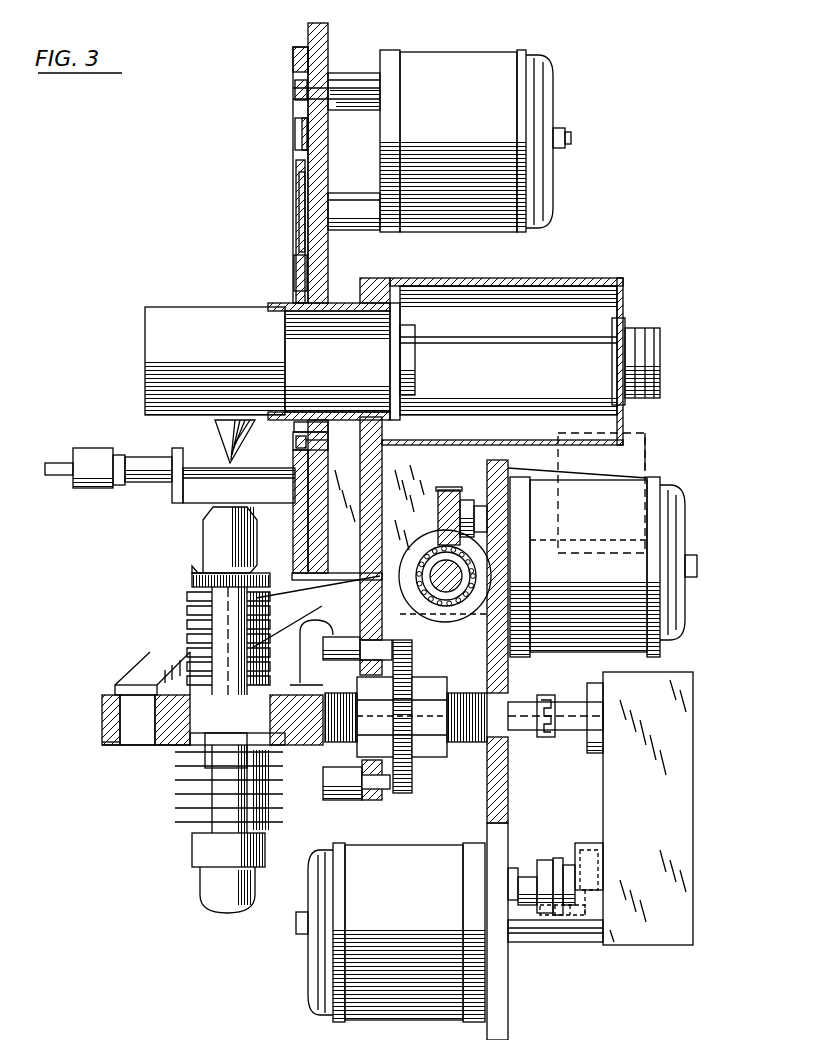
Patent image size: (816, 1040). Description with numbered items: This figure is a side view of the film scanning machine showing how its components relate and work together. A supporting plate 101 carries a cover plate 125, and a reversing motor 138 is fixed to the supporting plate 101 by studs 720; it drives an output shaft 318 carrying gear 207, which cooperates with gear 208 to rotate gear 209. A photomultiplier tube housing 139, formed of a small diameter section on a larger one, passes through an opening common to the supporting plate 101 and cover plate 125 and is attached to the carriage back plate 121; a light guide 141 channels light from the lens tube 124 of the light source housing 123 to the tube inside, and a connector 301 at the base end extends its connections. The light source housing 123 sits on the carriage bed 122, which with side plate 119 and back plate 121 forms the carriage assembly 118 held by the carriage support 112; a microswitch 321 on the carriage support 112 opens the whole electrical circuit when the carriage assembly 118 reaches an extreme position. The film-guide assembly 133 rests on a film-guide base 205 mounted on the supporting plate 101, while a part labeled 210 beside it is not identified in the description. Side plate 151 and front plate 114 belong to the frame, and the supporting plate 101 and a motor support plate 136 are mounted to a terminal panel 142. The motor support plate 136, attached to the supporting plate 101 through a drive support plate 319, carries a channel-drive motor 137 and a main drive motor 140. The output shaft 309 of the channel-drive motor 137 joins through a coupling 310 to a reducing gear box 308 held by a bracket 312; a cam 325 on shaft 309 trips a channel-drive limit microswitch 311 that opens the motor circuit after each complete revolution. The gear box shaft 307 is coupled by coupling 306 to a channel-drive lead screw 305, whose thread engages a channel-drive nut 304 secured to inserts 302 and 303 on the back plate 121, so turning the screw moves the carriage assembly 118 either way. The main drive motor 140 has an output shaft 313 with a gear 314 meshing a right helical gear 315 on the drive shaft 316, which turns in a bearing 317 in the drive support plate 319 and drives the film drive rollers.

The supporting plate 101 is at (308, 32).
The cover plate 125 is at (293, 62).
The gear 207 is at (296, 92).
The gear 208 is at (296, 134).
The gear 209 is at (299, 236).
The shaft 210 is at (296, 266).
The film-guide base 205 is at (300, 448).
The output shaft 318 is at (332, 90).
The studs 720 is at (358, 74).
The reversing motor 138 is at (475, 62).
The carriage back plate 121 is at (372, 290).
The photomultiplier tube housing 139 is at (184, 320).
The connector 301 is at (660, 358).
The light guide 141 is at (212, 428).
The film-guide assembly 133 is at (195, 505).
The terminal panel 142 is at (650, 456).
The main drive motor 140 is at (660, 484).
The drive support plate 319 is at (440, 472).
The bearing 317 is at (432, 545).
The gear 314 is at (460, 493).
The output shaft 313 is at (468, 515).
The right helical gear 315 is at (425, 612).
The drive shaft 316 is at (448, 592).
The lens tube 124 is at (208, 546).
The microswitch 321 is at (243, 763).
The carriage bed 122 is at (176, 738).
The light source housing 123 is at (205, 855).
The front plate 114 is at (105, 713).
The carriage assembly 118 is at (160, 732).
The carriage support 112 is at (104, 748).
The side plate 119 is at (140, 690).
The side plate 151 is at (172, 660).
The insert 302 is at (330, 648).
The channel-drive nut 304 is at (405, 760).
The channel-drive lead screw 305 is at (420, 745).
The insert 303 is at (352, 790).
The motor support plate 136 is at (508, 1032).
The bracket 312 is at (572, 676).
The coupling 306 is at (548, 738).
The shaft 307 is at (598, 752).
The reducing gear box 308 is at (690, 900).
The output shaft 309 is at (527, 868).
The channel-drive limit microswitch 311 is at (600, 875).
The cam 325 is at (590, 935).
The coupling 310 is at (575, 940).
The channel-drive motor 137 is at (436, 838).